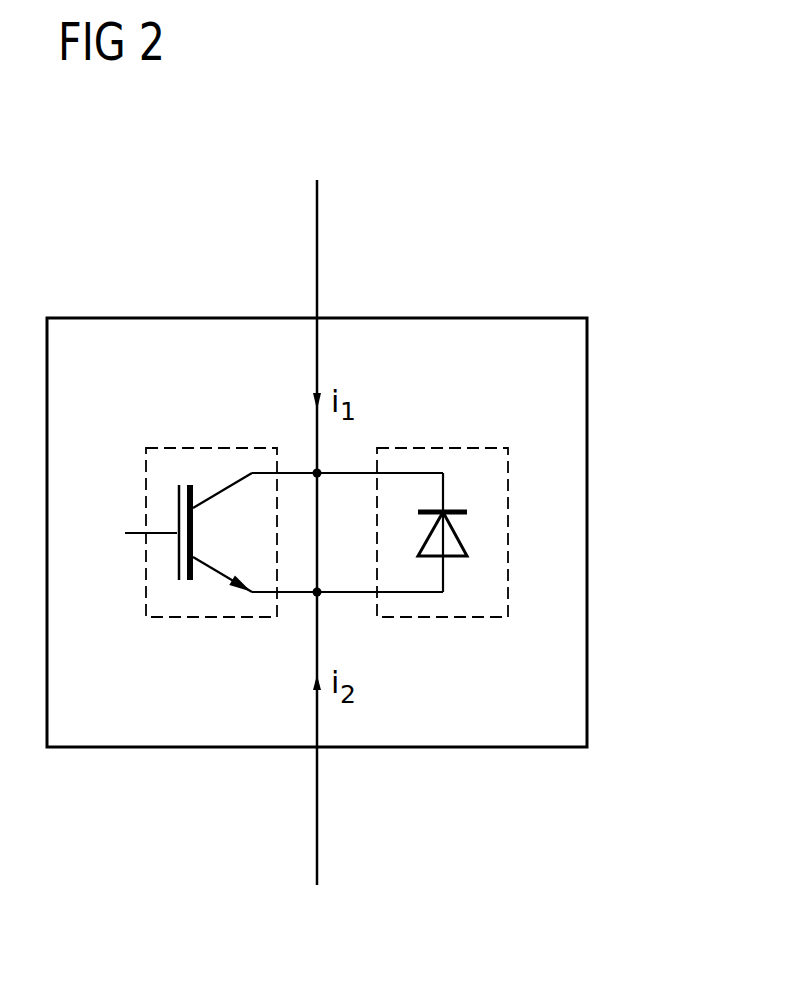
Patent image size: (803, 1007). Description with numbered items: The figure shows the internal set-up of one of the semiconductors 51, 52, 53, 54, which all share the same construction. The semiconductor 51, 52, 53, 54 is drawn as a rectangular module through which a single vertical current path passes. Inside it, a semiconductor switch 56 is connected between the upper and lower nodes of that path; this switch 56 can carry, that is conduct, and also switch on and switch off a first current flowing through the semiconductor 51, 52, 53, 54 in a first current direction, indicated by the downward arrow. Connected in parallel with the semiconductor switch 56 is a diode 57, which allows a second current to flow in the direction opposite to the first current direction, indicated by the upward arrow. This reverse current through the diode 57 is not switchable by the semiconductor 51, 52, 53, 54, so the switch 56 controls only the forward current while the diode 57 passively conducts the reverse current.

The semiconductor 51 is at (502, 318).
The semiconductor 52 is at (317, 532).
The semiconductor 53 is at (317, 532).
The semiconductor 54 is at (317, 532).
The semiconductor switch 56 is at (146, 487).
The diode 57 is at (509, 521).